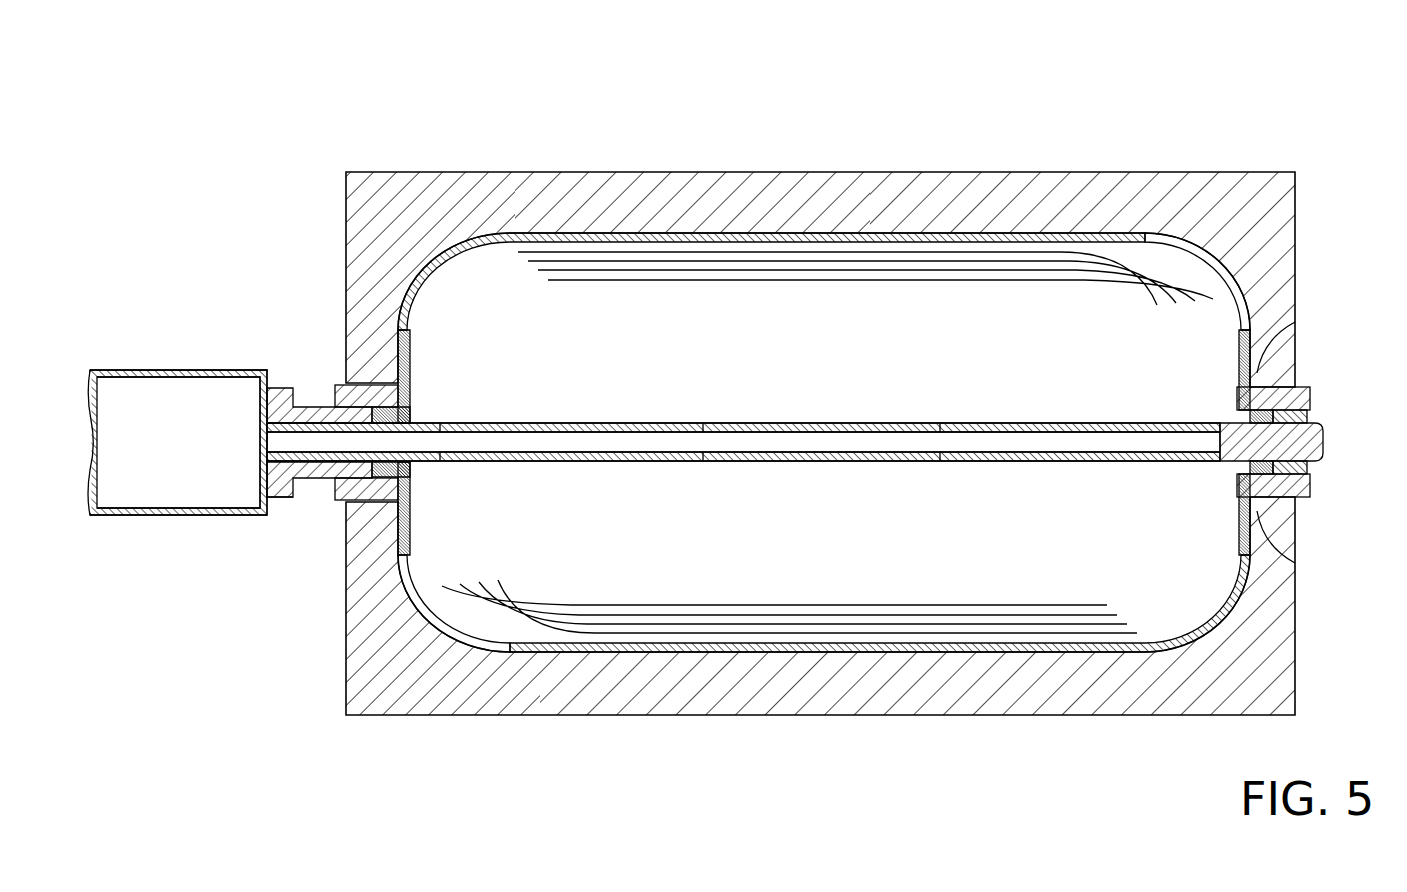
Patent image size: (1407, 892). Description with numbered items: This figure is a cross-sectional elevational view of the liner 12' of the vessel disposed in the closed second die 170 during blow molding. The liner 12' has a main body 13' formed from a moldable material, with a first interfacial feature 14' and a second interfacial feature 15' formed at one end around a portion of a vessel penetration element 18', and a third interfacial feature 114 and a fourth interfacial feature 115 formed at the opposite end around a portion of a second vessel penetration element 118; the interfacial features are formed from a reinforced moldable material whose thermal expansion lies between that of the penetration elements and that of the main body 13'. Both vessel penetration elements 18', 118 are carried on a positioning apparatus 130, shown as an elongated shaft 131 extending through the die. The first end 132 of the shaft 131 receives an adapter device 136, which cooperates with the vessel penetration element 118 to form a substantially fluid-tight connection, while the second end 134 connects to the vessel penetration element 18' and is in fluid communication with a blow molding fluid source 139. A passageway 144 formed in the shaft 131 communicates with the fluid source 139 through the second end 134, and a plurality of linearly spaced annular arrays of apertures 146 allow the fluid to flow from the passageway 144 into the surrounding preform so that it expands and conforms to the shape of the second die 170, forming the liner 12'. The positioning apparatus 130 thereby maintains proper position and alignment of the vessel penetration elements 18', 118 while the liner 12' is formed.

The second die 170 is at (1270, 182).
The liner 12' is at (824, 374).
The main body 13' is at (827, 444).
The first interfacial feature 14' is at (351, 456).
The second interfacial feature 15' is at (432, 455).
The vessel penetration element 18' is at (340, 403).
The elongated shaft 131 is at (785, 422).
The passageway 144 is at (677, 440).
The apertures 146 is at (940, 463).
The blow molding fluid source 139 is at (222, 492).
The positioning apparatus 130 is at (289, 500).
The second end 134 is at (320, 470).
The third interfacial feature 114 is at (1295, 322).
The fourth interfacial feature 115 is at (1237, 378).
The vessel penetration element 118 is at (1305, 398).
The first end 132 is at (1322, 431).
The adapter device 136 is at (1288, 470).